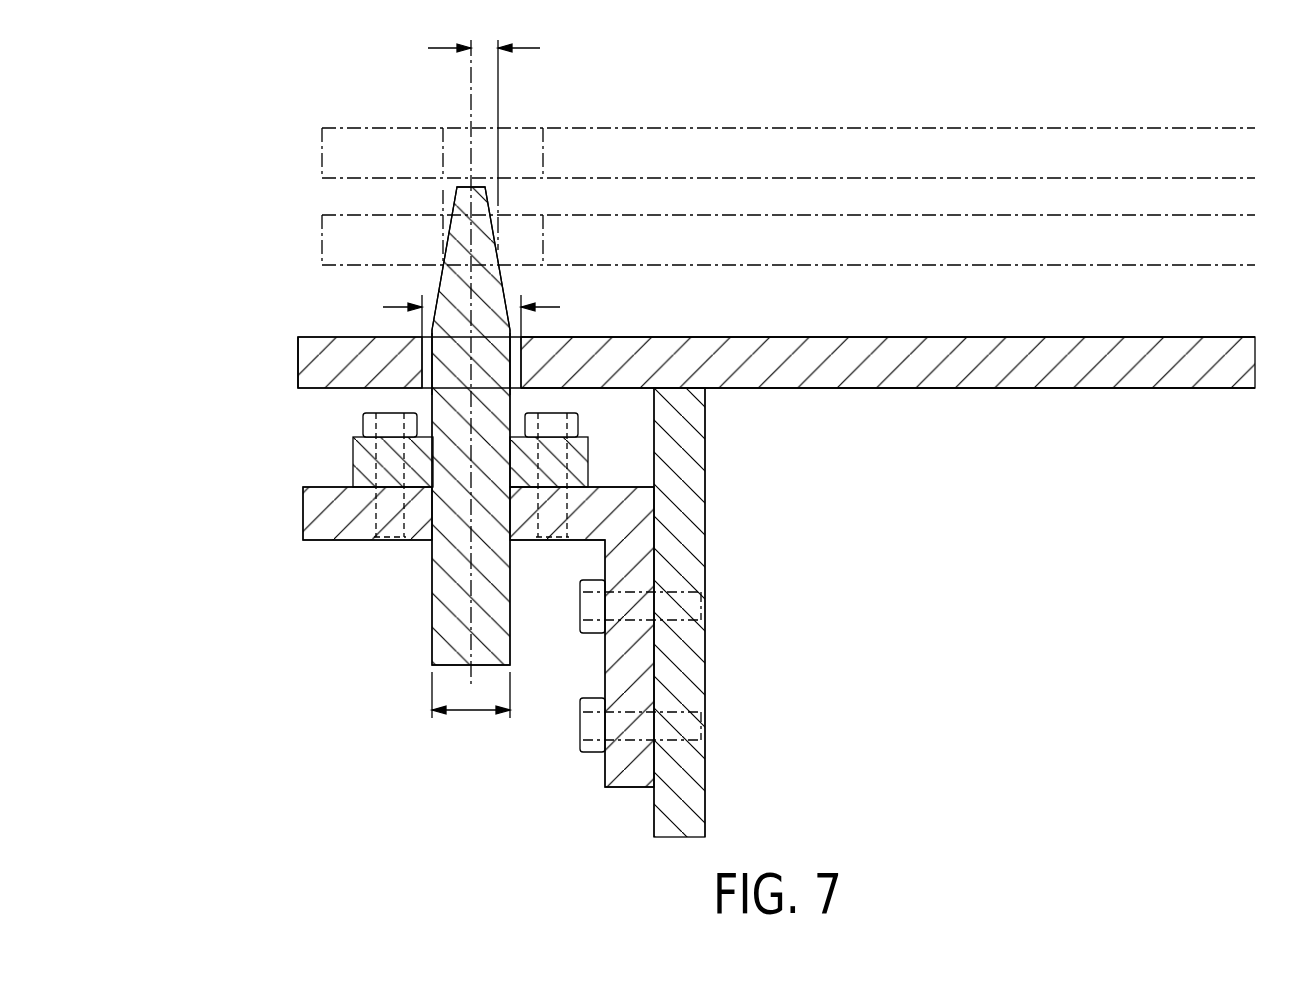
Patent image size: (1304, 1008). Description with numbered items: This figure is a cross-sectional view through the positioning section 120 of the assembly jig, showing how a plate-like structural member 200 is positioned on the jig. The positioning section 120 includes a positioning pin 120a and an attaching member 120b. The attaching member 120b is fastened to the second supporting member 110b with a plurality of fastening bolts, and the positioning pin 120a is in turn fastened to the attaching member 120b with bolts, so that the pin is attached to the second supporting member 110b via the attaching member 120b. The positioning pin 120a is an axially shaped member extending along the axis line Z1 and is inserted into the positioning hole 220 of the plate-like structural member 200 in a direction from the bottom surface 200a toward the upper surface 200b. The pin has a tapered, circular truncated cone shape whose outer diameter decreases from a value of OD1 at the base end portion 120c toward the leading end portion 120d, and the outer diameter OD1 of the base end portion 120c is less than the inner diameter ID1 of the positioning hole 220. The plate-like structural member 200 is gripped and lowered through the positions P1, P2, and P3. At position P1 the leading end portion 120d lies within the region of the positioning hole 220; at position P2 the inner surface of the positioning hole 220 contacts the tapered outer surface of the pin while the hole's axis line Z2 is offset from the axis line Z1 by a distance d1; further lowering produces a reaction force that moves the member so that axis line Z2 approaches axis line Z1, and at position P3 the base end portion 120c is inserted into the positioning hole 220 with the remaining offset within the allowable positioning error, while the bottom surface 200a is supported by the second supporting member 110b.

The plate-like structural member 200 is at (1086, 145).
The bottom surface 200a is at (900, 389).
The upper surface 200b is at (943, 337).
The positioning hole 220 is at (513, 392).
The second supporting member 110b is at (705, 510).
The positioning section 120 is at (416, 482).
The positioning pin 120a is at (420, 601).
The attaching member 120b is at (303, 510).
The base end portion 120c is at (432, 362).
The leading end portion 120d is at (457, 188).
The position P1 is at (308, 152).
The position P2 is at (310, 243).
The position P3 is at (286, 362).
The axis line Z1 is at (471, 85).
The axis line Z2 is at (498, 85).
The distance d1 is at (484, 28).
The inner diameter ID1 is at (484, 306).
The outer diameter OD1 is at (471, 711).